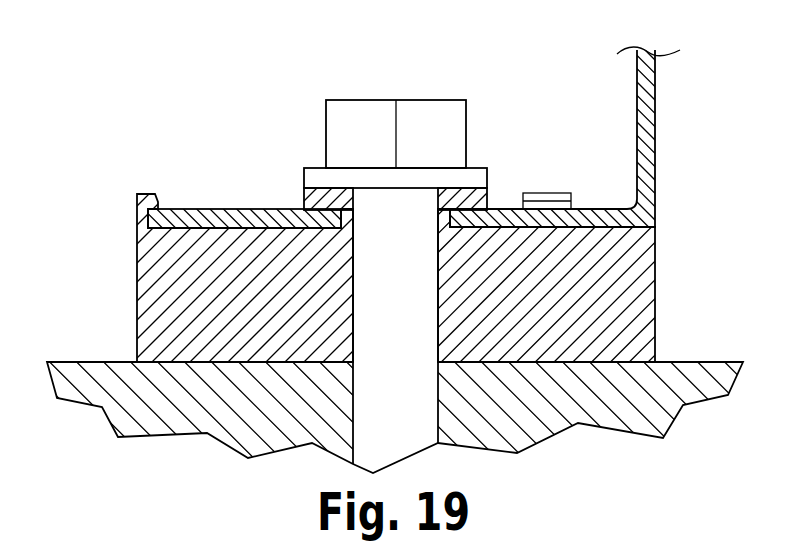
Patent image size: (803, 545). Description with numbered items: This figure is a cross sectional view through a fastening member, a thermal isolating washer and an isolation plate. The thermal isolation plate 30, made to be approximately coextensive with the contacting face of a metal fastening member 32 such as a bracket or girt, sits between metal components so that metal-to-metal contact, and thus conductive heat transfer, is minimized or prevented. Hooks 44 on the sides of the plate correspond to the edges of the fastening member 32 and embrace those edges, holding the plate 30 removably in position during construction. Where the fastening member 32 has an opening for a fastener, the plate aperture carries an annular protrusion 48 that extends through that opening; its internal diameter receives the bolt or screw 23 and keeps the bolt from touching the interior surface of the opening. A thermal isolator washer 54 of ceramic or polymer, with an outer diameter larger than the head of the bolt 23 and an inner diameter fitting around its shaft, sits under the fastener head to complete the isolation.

The bolt or screw 23 is at (420, 100).
The thermal isolation plate 30 is at (655, 300).
The metal fastening member 32 is at (655, 143).
The hooks 44 is at (145, 193).
The annular protrusion 48 is at (347, 219).
The thermal isolator washer 54 is at (487, 198).